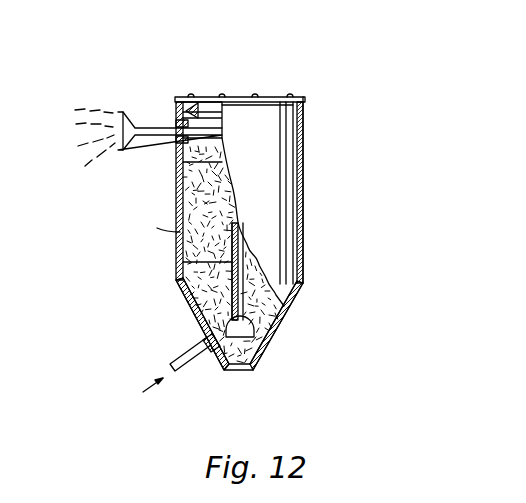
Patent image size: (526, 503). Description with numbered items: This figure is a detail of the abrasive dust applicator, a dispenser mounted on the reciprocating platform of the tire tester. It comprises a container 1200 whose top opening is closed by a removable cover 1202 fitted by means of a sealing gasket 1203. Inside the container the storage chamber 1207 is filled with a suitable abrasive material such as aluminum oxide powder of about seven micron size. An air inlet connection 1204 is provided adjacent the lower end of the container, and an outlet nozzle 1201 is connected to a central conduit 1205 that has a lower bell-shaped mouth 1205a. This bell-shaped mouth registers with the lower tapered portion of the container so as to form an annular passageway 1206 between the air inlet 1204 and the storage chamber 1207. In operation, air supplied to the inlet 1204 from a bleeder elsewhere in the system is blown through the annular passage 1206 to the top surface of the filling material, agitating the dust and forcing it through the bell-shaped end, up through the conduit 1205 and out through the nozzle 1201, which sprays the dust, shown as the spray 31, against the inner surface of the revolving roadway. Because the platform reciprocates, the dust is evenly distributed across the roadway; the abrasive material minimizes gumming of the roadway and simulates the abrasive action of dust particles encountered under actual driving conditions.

The spray 31 is at (57, 137).
The container 1200 is at (300, 178).
The outlet nozzle 1201 is at (176, 127).
The removable cover 1202 is at (226, 100).
The sealing gasket 1203 is at (185, 101).
The air inlet connection 1204 is at (194, 352).
The central conduit 1205 is at (178, 270).
The bell-shaped mouth 1205a is at (284, 312).
The annular passageway 1206 is at (262, 344).
The storage chamber 1207 is at (178, 206).